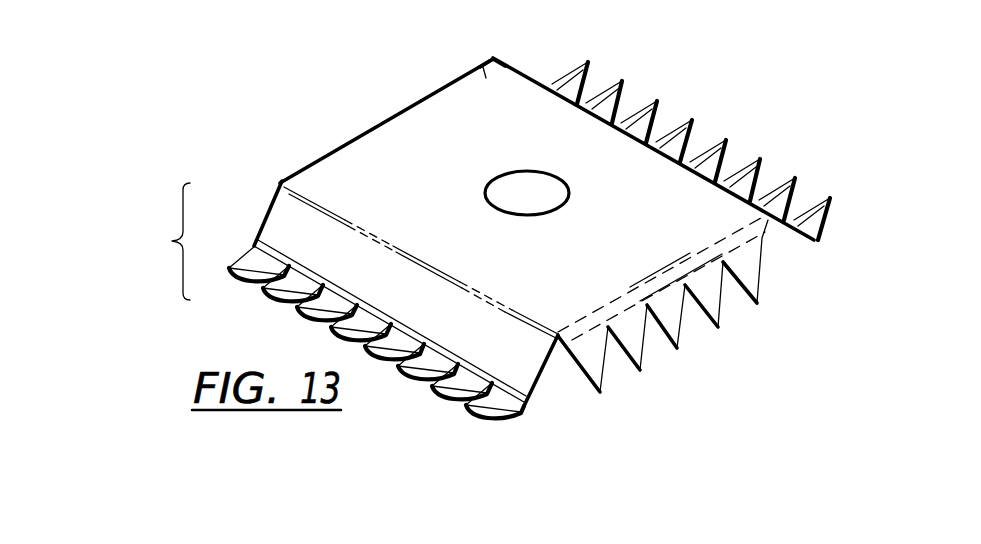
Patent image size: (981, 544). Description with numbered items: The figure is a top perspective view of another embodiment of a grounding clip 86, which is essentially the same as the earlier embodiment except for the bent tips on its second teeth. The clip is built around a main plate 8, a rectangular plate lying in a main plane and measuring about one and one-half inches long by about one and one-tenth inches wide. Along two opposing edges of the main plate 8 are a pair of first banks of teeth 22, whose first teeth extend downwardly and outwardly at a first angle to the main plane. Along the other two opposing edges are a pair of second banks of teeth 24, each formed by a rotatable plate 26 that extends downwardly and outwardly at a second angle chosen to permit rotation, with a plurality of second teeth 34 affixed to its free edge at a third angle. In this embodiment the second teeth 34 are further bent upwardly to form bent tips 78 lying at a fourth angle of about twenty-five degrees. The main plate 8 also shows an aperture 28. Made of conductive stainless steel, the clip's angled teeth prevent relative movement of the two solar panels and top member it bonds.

The main plate 8 is at (486, 62).
The first banks of teeth 22 is at (762, 265).
The second banks of teeth 24 is at (165, 241).
The rotatable plate 26 is at (290, 213).
The aperture 28 is at (497, 177).
The second teeth 34 is at (252, 248).
The bent tips 78 is at (231, 269).
The grounding clip 86 is at (711, 81).